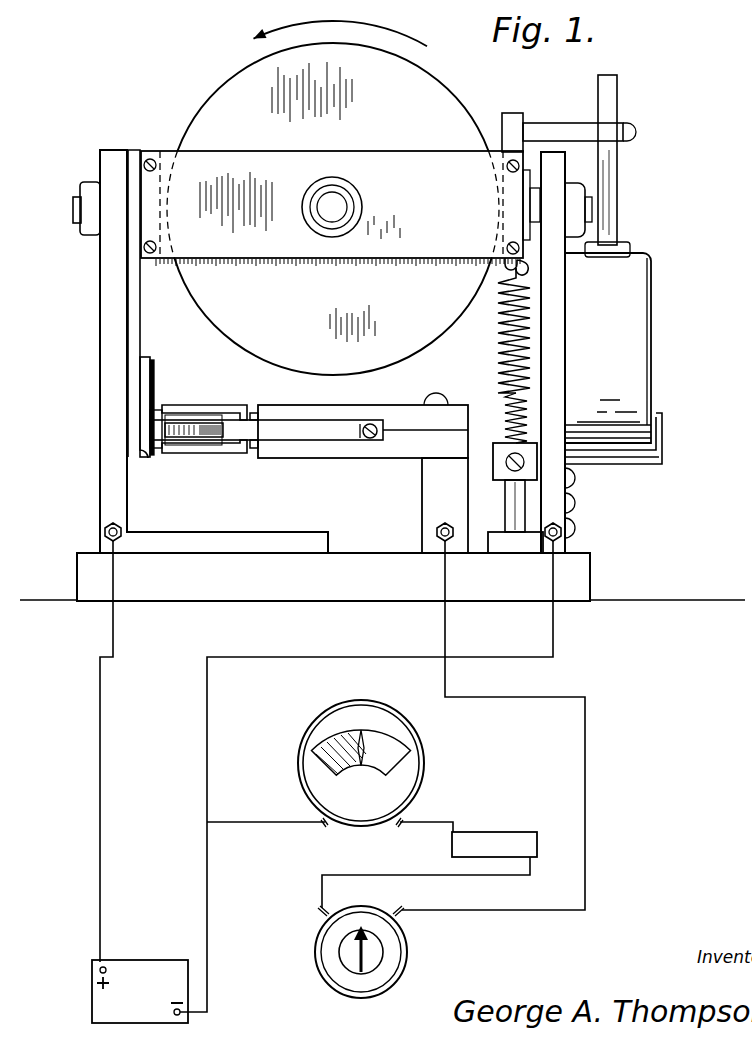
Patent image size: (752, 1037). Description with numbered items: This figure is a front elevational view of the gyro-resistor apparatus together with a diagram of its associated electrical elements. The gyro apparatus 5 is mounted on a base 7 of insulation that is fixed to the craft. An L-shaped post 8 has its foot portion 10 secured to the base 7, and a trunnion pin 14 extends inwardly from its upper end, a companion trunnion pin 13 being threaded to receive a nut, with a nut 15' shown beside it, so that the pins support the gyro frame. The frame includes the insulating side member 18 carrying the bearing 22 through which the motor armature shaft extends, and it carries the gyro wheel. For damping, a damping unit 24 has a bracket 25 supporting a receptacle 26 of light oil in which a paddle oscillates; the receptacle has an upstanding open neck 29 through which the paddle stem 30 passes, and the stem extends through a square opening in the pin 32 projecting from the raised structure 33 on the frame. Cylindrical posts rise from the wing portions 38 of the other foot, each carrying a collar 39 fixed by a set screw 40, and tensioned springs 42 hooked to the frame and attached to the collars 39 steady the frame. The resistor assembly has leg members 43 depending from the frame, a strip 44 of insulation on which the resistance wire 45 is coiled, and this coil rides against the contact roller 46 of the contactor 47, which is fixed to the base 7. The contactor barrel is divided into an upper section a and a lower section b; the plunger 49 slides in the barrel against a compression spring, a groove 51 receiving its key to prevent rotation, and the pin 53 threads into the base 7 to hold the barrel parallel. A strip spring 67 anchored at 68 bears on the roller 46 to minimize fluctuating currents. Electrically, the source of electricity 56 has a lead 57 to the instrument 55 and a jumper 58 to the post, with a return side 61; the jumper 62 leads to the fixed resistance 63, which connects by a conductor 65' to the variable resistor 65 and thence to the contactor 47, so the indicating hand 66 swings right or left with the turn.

The gyro apparatus 5 is at (246, 71).
The base 7 is at (311, 589).
The L-shaped post 8 is at (105, 390).
The foot portion 10 is at (255, 541).
The trunnion pin 13 is at (589, 202).
The trunnion pin 14 is at (73, 211).
The nut 15' is at (347, 211).
The frame side member 18 is at (371, 156).
The bearing 22 is at (363, 208).
The damping unit 24 is at (658, 280).
The bracket 25 is at (645, 463).
The receptacle 26 is at (637, 320).
The open neck 29 is at (208, 100).
The stem 30 is at (612, 196).
The pin 32 is at (545, 126).
The raised structure 33 is at (509, 115).
The wing portion 38 is at (517, 547).
The collar 39 is at (503, 482).
The set screw 40 is at (495, 465).
The tensioned spring 42 is at (496, 351).
The leg member 43 is at (134, 323).
The strip 44 is at (151, 360).
The resistance wire 45 is at (153, 387).
The contact roller 46 is at (158, 458).
The contactor 47 is at (386, 404).
The plunger 49 is at (252, 412).
The groove 51 is at (255, 453).
The pin 53 is at (447, 398).
The electric instrument 55 is at (355, 707).
The source of electricity 56 is at (138, 962).
The lead 57 is at (210, 939).
The jumper 58 is at (210, 736).
The return side 61 is at (101, 874).
The jumper 62 is at (440, 819).
The fixed resistance 63 is at (515, 832).
The variable resistor 65 is at (383, 966).
The conductor 65' is at (426, 877).
The indicating hand 66 is at (370, 748).
The strip spring 67 is at (270, 421).
The anchor 68 is at (371, 440).
The upper section a is at (409, 407).
The lower section b is at (410, 455).